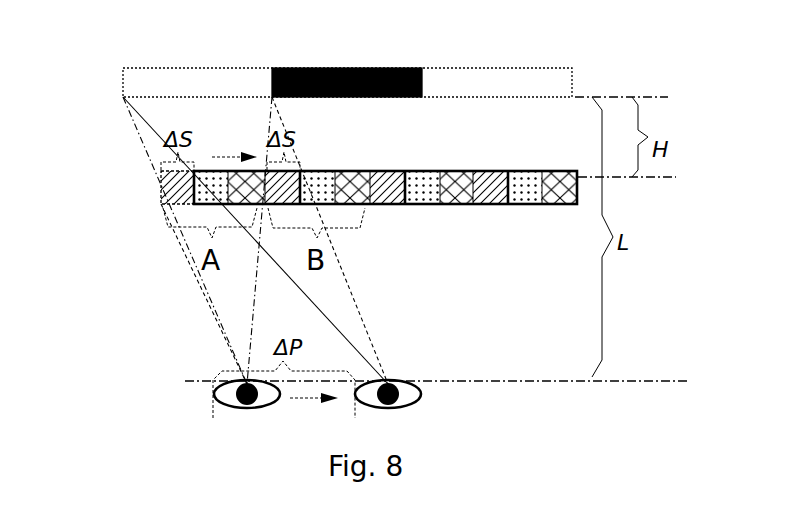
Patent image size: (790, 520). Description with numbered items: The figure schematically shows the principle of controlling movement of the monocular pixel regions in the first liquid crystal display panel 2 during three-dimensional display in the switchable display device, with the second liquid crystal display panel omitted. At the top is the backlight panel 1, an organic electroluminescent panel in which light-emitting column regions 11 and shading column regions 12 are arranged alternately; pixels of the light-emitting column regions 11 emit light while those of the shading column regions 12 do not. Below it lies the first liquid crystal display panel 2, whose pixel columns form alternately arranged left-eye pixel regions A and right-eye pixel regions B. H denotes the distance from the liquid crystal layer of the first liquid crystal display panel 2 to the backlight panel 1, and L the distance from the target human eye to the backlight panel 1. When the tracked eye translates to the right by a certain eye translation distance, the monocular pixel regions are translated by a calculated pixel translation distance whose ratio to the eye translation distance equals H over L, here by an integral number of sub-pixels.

The backlight panel 1 is at (316, 51).
The light-emitting column region 11 is at (191, 68).
The shading column region 12 is at (334, 68).
The first liquid crystal display panel 2 is at (160, 188).